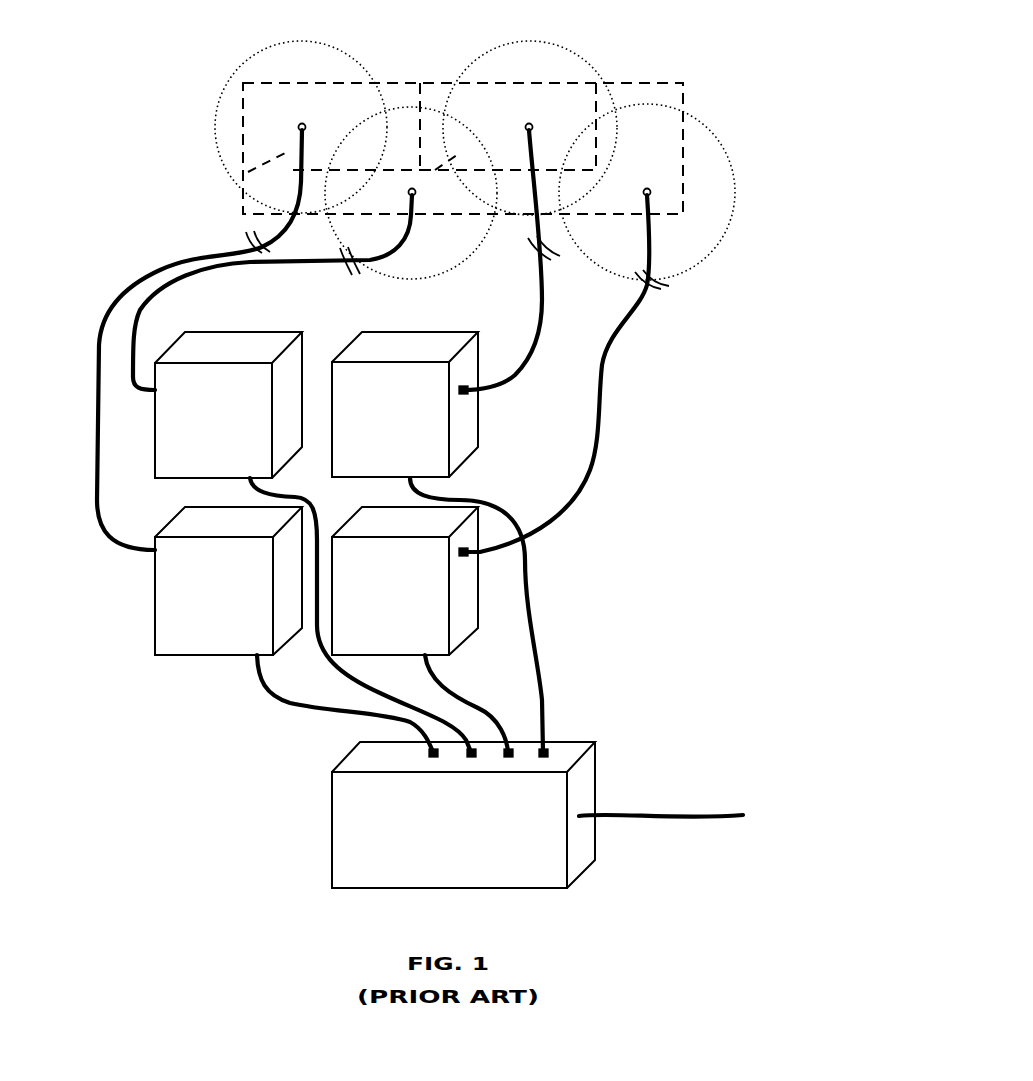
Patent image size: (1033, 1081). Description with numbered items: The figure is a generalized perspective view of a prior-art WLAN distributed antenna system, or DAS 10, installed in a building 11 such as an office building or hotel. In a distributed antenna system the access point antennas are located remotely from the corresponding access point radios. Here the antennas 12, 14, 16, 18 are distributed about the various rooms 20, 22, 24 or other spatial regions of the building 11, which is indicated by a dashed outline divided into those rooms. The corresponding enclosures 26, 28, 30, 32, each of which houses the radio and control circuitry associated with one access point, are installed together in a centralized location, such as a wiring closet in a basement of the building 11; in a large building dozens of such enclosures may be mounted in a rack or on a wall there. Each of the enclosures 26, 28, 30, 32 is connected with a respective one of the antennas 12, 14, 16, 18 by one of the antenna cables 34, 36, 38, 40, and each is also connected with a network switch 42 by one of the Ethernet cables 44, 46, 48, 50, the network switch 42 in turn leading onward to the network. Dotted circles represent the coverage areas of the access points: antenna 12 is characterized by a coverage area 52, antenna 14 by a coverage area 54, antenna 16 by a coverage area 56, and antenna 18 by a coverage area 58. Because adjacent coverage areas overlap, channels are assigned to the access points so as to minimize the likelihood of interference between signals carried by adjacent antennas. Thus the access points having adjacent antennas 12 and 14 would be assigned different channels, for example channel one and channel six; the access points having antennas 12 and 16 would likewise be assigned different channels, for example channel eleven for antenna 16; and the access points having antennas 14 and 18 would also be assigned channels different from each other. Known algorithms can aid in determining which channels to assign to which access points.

The distributed antenna system 10 is at (140, 53).
The building 11 is at (243, 212).
The antenna 12 is at (416, 193).
The antenna 14 is at (525, 127).
The antenna 16 is at (298, 127).
The antenna 18 is at (643, 192).
The room 20 is at (334, 127).
The room 22 is at (508, 126).
The room 24 is at (657, 96).
The enclosure 26 is at (155, 453).
The enclosure 28 is at (456, 462).
The enclosure 30 is at (155, 617).
The enclosure 32 is at (450, 643).
The antenna cable 34 is at (170, 286).
The antenna cable 36 is at (540, 292).
The antenna cable 38 is at (100, 326).
The antenna cable 40 is at (622, 330).
The network switch 42 is at (332, 838).
The Ethernet cable 44 is at (375, 695).
The Ethernet cable 46 is at (548, 694).
The Ethernet cable 48 is at (283, 704).
The Ethernet cable 50 is at (476, 713).
The coverage area 52 is at (420, 279).
The coverage area 54 is at (470, 64).
The coverage area 56 is at (240, 65).
The coverage area 58 is at (735, 134).